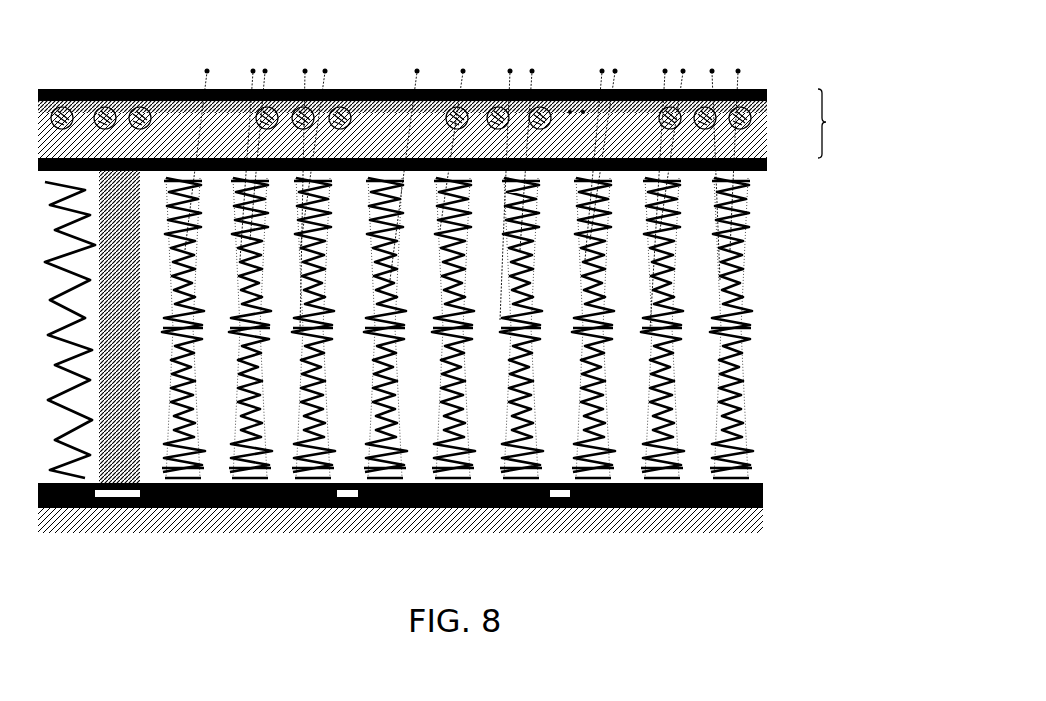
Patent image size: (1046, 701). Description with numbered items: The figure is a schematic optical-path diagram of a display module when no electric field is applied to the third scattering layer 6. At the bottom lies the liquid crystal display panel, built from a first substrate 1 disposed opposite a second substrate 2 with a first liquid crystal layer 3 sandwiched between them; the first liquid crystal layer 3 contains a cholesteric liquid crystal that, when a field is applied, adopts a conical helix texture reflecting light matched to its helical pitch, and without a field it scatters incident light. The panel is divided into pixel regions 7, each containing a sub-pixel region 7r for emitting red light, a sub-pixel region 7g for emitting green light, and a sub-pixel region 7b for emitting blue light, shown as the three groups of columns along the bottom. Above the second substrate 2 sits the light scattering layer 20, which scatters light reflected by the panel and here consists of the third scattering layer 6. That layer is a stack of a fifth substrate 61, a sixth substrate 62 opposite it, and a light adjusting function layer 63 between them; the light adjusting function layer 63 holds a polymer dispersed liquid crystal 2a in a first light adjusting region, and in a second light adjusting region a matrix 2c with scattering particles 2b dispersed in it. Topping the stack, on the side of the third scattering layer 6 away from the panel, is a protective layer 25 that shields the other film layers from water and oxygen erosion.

The first substrate 1 is at (758, 491).
The second substrate 2 is at (758, 167).
The polymer dispersed liquid crystal 2a is at (70, 115).
The scattering particles 2b is at (583, 111).
The matrix 2c is at (570, 111).
The first liquid crystal layer 3 is at (421, 326).
The third scattering layer 6 is at (452, 124).
The light scattering layer 20 is at (842, 123).
The protective layer 25 is at (758, 95).
The fifth substrate 61 is at (757, 137).
The sixth substrate 62 is at (757, 118).
The light adjusting function layer 63 is at (757, 104).
The pixel region 7 is at (453, 380).
The sub-pixel region for emitting red light 7r is at (340, 537).
The sub-pixel region for emitting green light 7g is at (552, 537).
The sub-pixel region for emitting blue light 7b is at (763, 537).